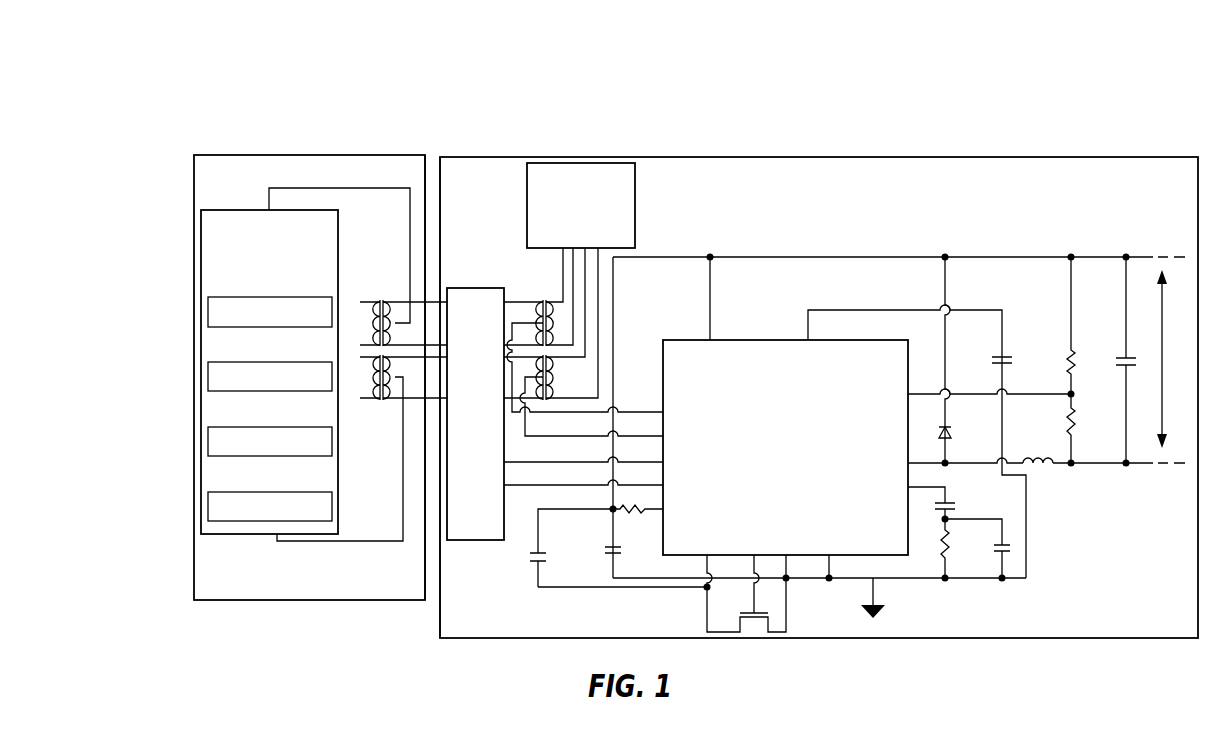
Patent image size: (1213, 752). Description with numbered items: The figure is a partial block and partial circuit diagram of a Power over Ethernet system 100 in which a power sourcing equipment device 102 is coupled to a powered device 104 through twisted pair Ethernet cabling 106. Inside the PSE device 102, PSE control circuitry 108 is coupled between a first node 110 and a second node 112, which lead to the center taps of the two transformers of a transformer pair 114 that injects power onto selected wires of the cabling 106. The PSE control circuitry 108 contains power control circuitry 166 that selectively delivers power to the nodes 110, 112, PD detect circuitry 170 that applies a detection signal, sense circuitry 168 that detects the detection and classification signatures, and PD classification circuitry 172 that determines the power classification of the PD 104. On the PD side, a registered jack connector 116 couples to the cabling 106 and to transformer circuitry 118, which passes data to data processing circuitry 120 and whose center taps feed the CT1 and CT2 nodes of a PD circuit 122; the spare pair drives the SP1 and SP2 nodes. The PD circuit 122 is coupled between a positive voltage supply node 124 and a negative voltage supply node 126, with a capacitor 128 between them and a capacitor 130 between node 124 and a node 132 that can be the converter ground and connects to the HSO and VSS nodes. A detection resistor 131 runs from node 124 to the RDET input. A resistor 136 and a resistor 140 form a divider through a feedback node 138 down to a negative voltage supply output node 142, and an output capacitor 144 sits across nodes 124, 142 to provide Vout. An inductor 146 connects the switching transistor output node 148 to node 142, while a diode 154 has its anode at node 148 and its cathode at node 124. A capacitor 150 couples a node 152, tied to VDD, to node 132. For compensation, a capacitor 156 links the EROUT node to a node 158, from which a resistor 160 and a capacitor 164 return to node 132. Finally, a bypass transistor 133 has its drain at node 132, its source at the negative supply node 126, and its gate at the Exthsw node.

The Power over Ethernet (POE) system 100 is at (310, 54).
The power sourcing equipment (PSE) device 102 is at (308, 155).
The powered device (PD) 104 is at (598, 156).
The twisted pair (Ethernet) cabling 106 is at (433, 155).
The PSE control circuitry 108 is at (250, 210).
The first node 110 is at (284, 187).
The second node 112 is at (343, 541).
The transformer pair 114 is at (383, 292).
The RJ-45 connector 116 is at (453, 288).
The transformer circuitry 118 is at (539, 288).
The data processing circuitry 120 is at (637, 192).
The PD circuit 122 is at (683, 340).
The positive voltage supply node 124 is at (668, 257).
The negative voltage supply node 126 is at (642, 590).
The capacitor 128 is at (530, 560).
The capacitor 130 is at (605, 555).
The detection resistor 131 is at (628, 512).
The node 132 is at (797, 579).
The bypass transistor 133 is at (762, 620).
The resistor 136 is at (1067, 366).
The feedback node 138 is at (1074, 390).
The resistor 140 is at (1067, 420).
The negative voltage supply output node 142 is at (1124, 460).
The output capacitor 144 is at (1126, 358).
The inductor 146 is at (1040, 468).
The switching transistor output (SWO) node 148 is at (948, 463).
The capacitor 150 is at (1006, 362).
The node 152 is at (852, 311).
The diode 154 is at (949, 420).
The capacitor 156 is at (949, 503).
The node 158 is at (947, 519).
The resistor 160 is at (950, 552).
The capacitor 164 is at (1000, 545).
The power control circuitry 166 is at (260, 297).
The sense circuitry 168 is at (278, 362).
The PD detect circuitry 170 is at (265, 427).
The PD classification circuitry 172 is at (268, 492).